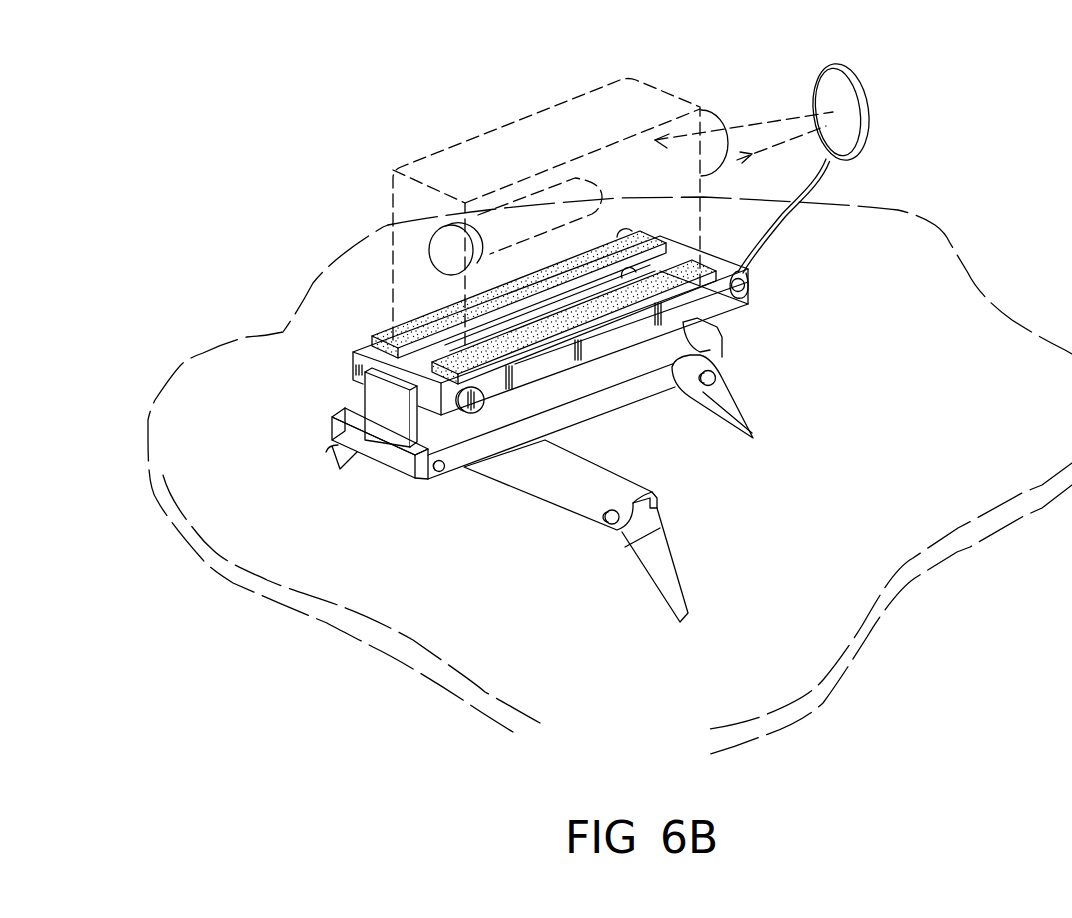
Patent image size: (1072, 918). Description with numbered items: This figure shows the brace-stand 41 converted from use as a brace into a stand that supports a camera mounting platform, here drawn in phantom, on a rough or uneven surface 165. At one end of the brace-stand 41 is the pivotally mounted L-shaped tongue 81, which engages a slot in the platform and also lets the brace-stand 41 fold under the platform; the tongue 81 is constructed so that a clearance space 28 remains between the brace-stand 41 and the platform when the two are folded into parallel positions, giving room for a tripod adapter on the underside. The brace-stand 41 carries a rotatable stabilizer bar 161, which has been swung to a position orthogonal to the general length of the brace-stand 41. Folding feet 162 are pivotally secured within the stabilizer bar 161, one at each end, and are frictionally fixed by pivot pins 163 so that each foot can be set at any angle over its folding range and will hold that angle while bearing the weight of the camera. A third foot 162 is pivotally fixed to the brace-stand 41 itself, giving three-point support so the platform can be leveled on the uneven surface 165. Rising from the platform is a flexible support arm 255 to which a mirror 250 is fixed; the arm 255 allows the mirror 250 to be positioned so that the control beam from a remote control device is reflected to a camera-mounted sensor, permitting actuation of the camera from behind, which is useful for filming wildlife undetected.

The clearance space 28 is at (605, 360).
The brace-stand 41 is at (477, 528).
The tongue 81 is at (386, 428).
The stabilizer bar 161 is at (558, 498).
The folding feet 162 is at (340, 458).
The pivot pins 163 is at (603, 527).
The rough or uneven surface 165 is at (918, 456).
The mirror 250 is at (867, 83).
The flexible support arm 255 is at (778, 219).